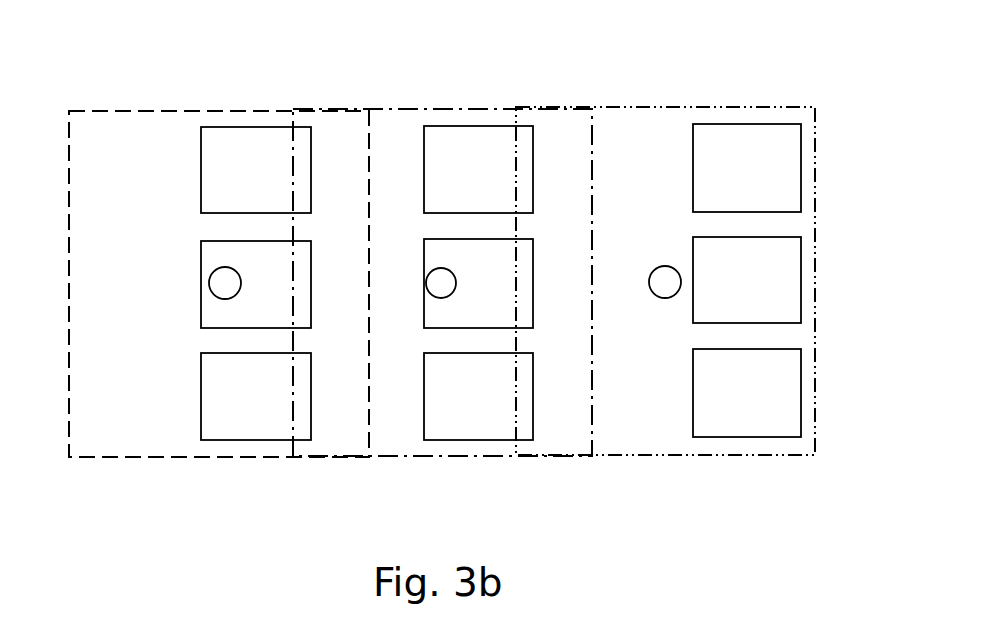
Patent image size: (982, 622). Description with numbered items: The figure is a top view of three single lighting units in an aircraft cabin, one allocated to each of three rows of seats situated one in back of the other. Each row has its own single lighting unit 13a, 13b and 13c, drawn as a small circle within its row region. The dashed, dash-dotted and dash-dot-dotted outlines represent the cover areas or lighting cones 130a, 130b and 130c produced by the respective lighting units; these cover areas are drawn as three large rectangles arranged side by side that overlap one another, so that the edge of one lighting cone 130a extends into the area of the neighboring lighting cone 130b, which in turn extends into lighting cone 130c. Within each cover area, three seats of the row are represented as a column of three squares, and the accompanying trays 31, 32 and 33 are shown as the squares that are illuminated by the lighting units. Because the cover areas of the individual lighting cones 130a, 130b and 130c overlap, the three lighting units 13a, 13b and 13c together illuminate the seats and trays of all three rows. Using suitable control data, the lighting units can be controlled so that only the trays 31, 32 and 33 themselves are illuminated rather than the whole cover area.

The lighting cone 130a is at (103, 109).
The lighting cone 130b is at (458, 108).
The lighting cone 130c is at (632, 108).
The single lighting unit 13a is at (218, 283).
The single lighting unit 13b is at (438, 275).
The single lighting unit 13c is at (663, 280).
The tray 31 is at (770, 138).
The tray 32 is at (777, 270).
The tray 33 is at (768, 420).